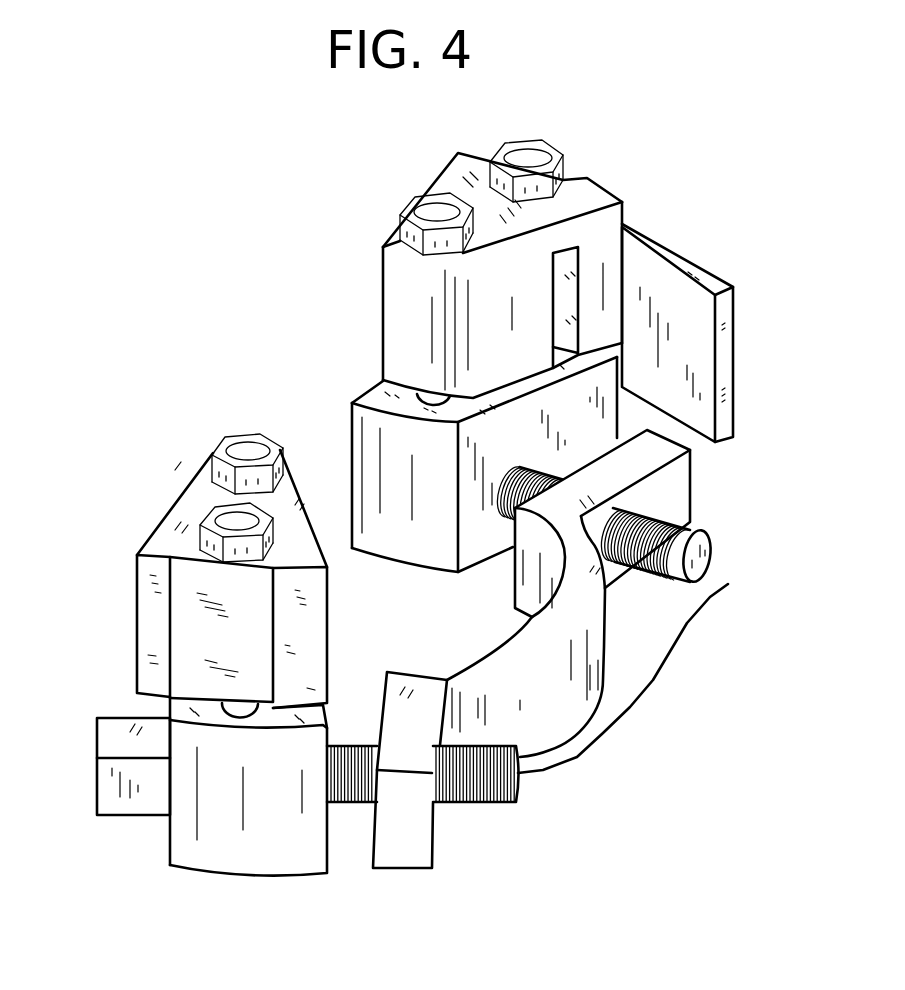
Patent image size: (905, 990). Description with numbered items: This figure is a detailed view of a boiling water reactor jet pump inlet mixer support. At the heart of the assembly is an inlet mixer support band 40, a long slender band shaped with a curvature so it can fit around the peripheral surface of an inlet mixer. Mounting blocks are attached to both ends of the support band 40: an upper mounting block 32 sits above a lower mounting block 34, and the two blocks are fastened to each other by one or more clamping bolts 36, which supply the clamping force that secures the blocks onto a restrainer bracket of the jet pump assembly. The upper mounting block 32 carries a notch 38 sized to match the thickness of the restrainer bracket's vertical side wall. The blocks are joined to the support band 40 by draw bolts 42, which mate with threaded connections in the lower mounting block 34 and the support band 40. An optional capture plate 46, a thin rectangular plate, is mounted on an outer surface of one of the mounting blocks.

The upper mounting block 32 is at (145, 603).
The lower mounting block 34 is at (180, 826).
The clamping bolts 36 is at (217, 507).
The notch 38 is at (565, 290).
The inlet mixer support band 40 is at (603, 675).
The draw bolts 42 is at (693, 553).
The capture plate 46 is at (722, 282).